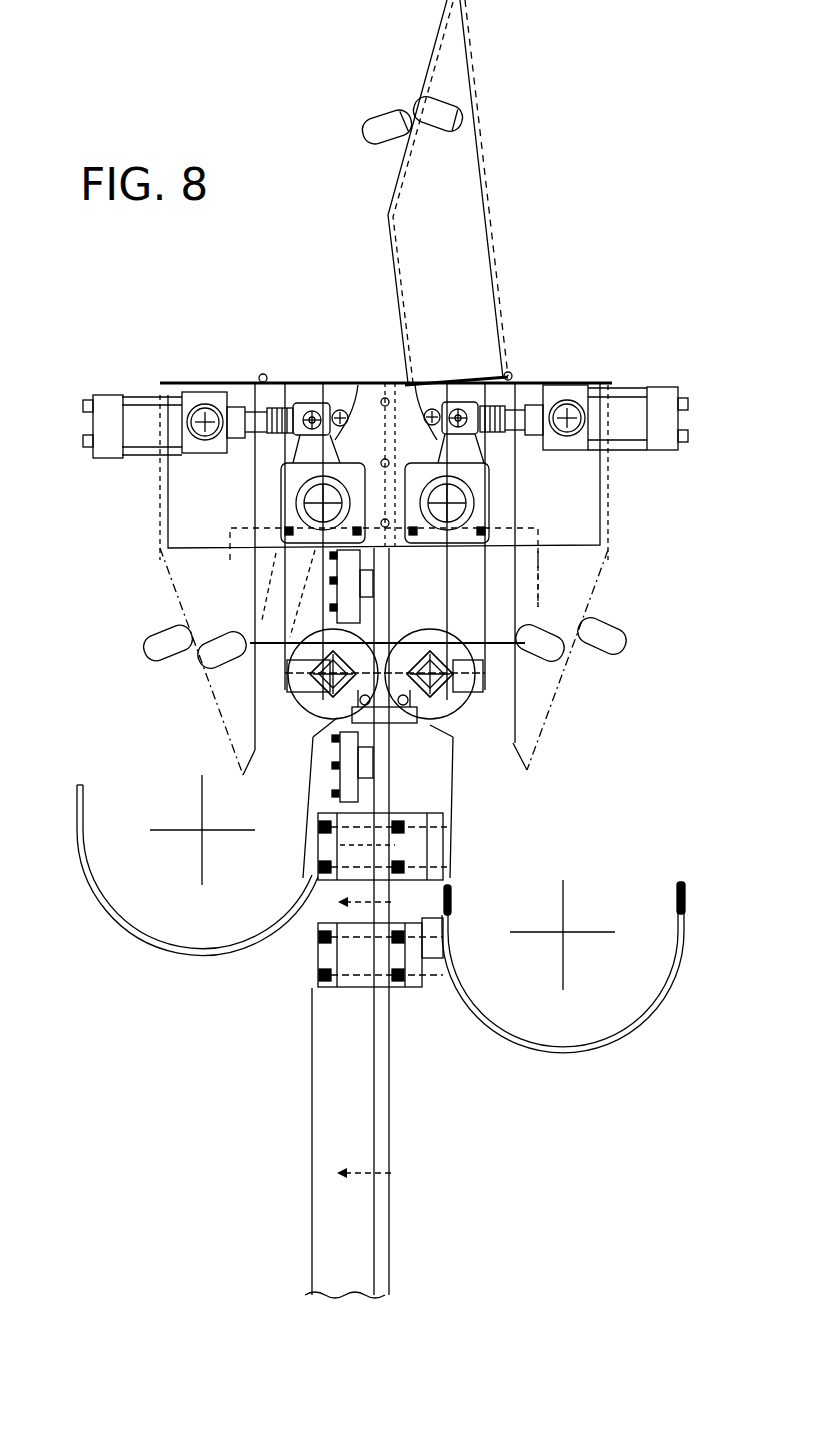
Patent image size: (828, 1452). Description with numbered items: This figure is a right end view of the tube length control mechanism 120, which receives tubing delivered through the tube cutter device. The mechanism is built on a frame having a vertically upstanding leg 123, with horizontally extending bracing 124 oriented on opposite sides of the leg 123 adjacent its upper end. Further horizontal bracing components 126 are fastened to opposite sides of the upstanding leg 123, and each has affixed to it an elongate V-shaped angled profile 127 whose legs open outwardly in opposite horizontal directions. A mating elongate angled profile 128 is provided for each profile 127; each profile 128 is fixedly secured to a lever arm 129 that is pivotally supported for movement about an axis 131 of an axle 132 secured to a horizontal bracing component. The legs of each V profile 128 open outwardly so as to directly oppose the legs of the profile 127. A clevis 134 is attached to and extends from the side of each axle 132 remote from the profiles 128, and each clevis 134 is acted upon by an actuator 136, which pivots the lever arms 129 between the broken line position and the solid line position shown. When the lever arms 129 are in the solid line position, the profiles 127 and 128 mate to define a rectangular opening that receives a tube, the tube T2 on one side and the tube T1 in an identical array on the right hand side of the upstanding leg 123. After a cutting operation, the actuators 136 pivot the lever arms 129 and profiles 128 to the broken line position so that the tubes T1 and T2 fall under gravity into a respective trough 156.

The tube length control mechanism 120 is at (106, 331).
The actuator 136 is at (203, 380).
The clevis 134 is at (358, 383).
The axle 132 is at (283, 488).
The axis 131 is at (272, 520).
The lever arm 129 is at (297, 602).
The angled profile 127 is at (380, 625).
The angled profile 128 is at (320, 690).
The horizontal bracing component 126 is at (363, 720).
The tube T1 is at (455, 712).
The tube T2 is at (310, 713).
The bracing 124 is at (325, 960).
The trough 156 is at (152, 925).
The upstanding leg 123 is at (330, 1133).